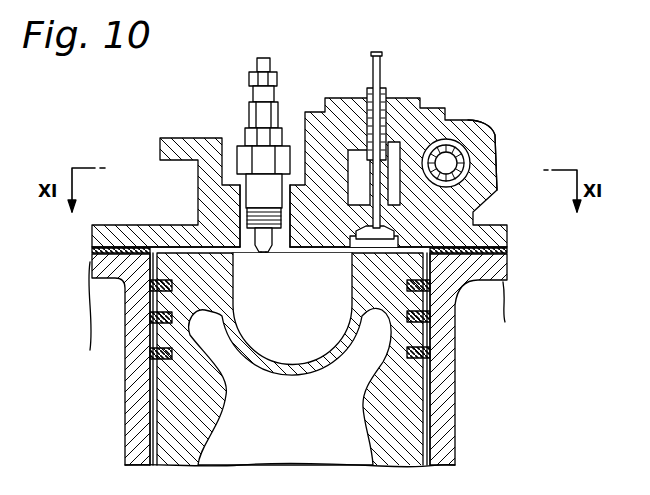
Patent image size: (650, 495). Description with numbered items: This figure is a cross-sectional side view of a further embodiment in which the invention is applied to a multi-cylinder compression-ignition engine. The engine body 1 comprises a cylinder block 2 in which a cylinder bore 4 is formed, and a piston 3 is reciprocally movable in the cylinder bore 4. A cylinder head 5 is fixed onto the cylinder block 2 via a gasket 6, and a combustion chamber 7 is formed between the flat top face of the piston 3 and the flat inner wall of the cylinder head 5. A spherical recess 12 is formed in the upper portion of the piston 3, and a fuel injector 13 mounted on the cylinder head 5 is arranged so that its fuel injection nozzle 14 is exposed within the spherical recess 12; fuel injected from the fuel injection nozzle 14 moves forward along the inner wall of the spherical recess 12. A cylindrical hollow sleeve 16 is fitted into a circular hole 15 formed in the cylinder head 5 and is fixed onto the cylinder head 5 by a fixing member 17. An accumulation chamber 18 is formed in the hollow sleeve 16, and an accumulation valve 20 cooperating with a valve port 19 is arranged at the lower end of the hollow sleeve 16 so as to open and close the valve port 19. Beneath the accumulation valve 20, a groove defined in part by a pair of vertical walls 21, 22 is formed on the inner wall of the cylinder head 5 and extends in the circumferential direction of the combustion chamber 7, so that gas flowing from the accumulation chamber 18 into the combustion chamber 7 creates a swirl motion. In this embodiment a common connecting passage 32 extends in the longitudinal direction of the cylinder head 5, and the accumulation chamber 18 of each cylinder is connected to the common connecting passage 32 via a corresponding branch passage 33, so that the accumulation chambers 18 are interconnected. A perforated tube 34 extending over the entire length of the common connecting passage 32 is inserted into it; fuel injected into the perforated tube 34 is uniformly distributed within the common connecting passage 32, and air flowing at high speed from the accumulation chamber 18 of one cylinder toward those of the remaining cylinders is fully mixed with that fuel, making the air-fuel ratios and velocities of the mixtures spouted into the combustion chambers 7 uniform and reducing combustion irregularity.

The engine body 1 is at (505, 305).
The cylinder block 2 is at (448, 404).
The piston 3 is at (352, 465).
The cylinder bore 4 is at (418, 458).
The cylinder head 5 is at (187, 142).
The gasket 6 is at (92, 251).
The combustion chamber 7 is at (301, 292).
The spherical recess 12 is at (336, 340).
The fuel injector 13 is at (274, 103).
The fuel injection nozzle 14 is at (264, 260).
The circular hole 15 is at (323, 142).
The cylindrical hollow sleeve 16 is at (319, 142).
The fixing member 17 is at (401, 107).
The accumulation chamber 18 is at (352, 170).
The valve port 19 is at (508, 238).
The accumulation valve 20 is at (294, 157).
The vertical wall 21 is at (365, 247).
The vertical wall 22 is at (427, 287).
The common connecting passage 32 is at (455, 166).
The branch passage 33 is at (430, 166).
The perforated tube 34 is at (486, 162).